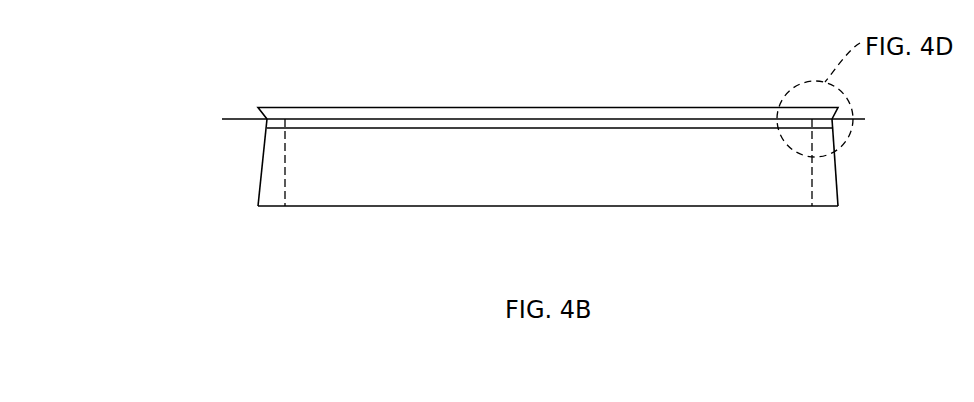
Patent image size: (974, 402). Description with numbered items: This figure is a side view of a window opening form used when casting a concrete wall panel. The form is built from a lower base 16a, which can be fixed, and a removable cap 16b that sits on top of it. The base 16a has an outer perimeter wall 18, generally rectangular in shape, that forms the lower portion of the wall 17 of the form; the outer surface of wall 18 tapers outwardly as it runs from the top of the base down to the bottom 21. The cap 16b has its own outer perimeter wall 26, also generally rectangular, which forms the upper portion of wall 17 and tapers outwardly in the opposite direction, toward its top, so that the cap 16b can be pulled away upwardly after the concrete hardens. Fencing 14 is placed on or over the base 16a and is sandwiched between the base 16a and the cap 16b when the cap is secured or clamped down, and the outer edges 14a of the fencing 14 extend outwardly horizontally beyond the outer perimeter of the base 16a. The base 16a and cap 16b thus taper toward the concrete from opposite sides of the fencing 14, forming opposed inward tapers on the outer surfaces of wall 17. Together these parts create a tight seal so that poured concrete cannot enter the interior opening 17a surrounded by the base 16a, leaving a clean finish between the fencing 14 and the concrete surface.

The fencing 14 is at (228, 119).
The outer edges of the fencing 14a is at (243, 118).
The outer perimeter wall of the cap 26 is at (277, 107).
The cap 16b is at (698, 107).
The outer perimeter wall of the base 18 is at (273, 207).
The bottom 21 is at (693, 207).
The base 16a is at (825, 205).
The wall of window opening form 17 is at (285, 165).
The opening 17a is at (467, 163).